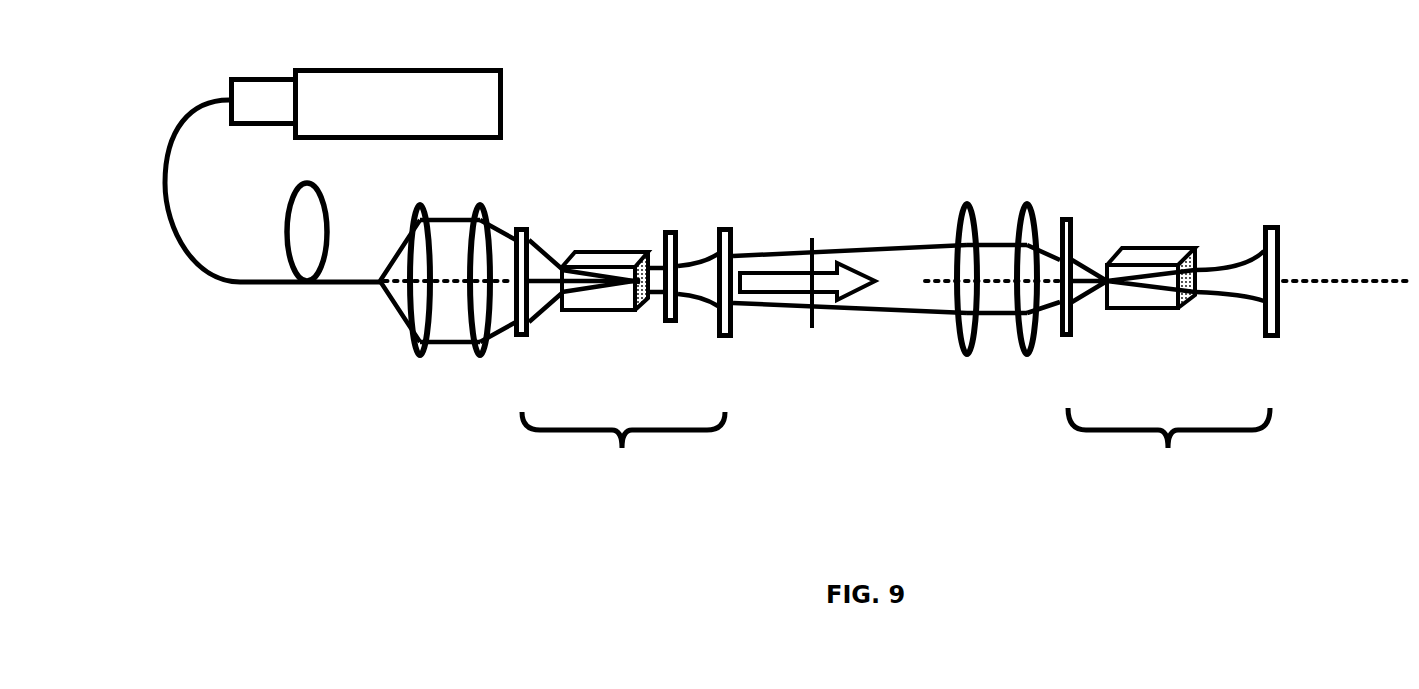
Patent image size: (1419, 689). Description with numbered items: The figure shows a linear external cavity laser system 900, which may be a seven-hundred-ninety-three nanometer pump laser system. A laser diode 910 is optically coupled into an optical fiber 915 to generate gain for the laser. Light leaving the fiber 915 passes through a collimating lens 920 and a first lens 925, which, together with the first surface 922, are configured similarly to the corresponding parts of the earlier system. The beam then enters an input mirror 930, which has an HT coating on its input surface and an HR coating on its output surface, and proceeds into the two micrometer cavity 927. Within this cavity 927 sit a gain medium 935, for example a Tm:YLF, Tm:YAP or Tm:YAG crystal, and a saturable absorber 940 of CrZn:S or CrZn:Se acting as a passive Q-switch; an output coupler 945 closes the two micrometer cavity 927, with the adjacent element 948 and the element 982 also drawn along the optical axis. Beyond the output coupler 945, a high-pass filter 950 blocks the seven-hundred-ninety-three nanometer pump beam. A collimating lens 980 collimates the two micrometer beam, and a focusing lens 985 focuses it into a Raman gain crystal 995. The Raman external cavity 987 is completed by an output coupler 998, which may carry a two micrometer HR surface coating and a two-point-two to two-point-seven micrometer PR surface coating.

The linear external cavity laser system 900 is at (192, 58).
The laser diode 910 is at (503, 77).
The optical fiber 915 is at (205, 272).
The collimating lens 920 is at (417, 352).
The first lens 925 is at (482, 353).
The input mirror 930 is at (547, 203).
The first surface 922 is at (540, 334).
The gain medium 935 is at (575, 243).
The saturable absorber 940 is at (669, 326).
The output coupler 945 is at (721, 212).
The output mirror 948 is at (723, 340).
The high-pass filter 950 is at (812, 329).
The collimating lens 980 is at (965, 353).
The focusing lens 985 is at (1028, 353).
The input plate 982 is at (1078, 335).
The Raman gain crystal 995 is at (1120, 246).
The output coupler 998 is at (1264, 338).
The 2 μm cavity 927 is at (622, 450).
The Raman external cavity 987 is at (1167, 450).